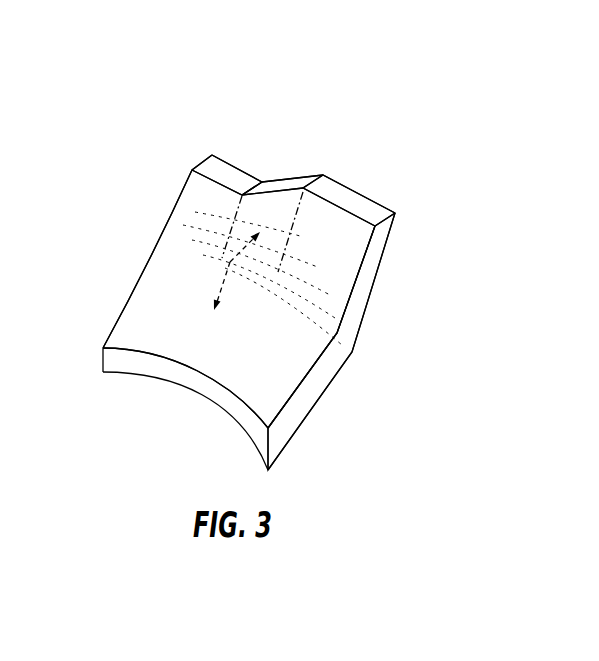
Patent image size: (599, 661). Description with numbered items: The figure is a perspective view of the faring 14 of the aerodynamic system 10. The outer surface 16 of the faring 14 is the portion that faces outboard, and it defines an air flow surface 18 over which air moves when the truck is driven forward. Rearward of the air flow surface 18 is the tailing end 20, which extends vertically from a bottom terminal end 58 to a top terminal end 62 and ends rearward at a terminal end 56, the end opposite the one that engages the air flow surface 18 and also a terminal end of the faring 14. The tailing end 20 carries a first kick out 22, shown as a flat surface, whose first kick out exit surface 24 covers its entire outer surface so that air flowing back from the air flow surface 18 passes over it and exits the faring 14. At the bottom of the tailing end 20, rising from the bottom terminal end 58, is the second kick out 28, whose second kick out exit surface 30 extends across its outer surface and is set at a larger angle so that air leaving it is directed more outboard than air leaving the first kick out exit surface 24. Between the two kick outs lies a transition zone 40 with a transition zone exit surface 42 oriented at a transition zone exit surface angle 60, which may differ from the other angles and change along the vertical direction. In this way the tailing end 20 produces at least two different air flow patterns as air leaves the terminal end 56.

The assembly 10 is at (400, 135).
The faring 14 is at (155, 95).
The outer surface 16 is at (143, 318).
The air flow surface 18 is at (283, 372).
The tailing end 20 is at (208, 192).
The first kick out 22 is at (198, 212).
The first kick out exit surface 24 is at (178, 204).
The second kick out 28 is at (333, 258).
The second kick out exit surface 30 is at (336, 229).
The transition zone 40 is at (287, 225).
The transition zone exit surface 42 is at (262, 193).
The terminal end 56 is at (333, 186).
The bottom terminal end 58 is at (376, 242).
The transition zone exit surface angle 60 is at (232, 262).
The top terminal end 62 is at (208, 156).